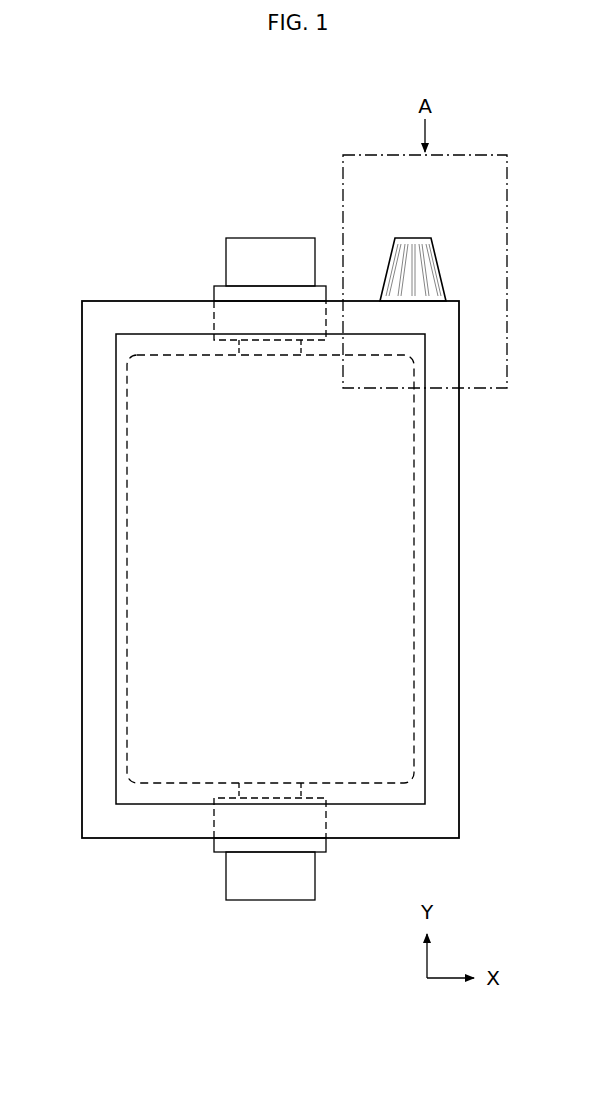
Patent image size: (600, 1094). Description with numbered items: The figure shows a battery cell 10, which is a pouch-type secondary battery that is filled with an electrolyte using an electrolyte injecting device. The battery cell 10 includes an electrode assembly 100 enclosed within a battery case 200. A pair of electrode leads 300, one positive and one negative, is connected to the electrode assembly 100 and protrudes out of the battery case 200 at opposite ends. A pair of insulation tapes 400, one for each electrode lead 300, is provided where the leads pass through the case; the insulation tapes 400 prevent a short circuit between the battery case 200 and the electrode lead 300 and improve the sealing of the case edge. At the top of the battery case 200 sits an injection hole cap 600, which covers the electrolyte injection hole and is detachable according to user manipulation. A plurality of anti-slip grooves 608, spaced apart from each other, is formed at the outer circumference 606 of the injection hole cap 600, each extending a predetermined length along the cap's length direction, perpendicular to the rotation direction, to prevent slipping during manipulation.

The battery cell 10 is at (124, 205).
The electrode assembly 100 is at (414, 470).
The battery case 200 is at (448, 432).
The electrode lead 300 is at (272, 238).
The insulation tape 400 is at (222, 288).
The injection hole cap 600 is at (450, 226).
The outer circumference 606 is at (389, 260).
The anti-slip groove 608 is at (424, 277).